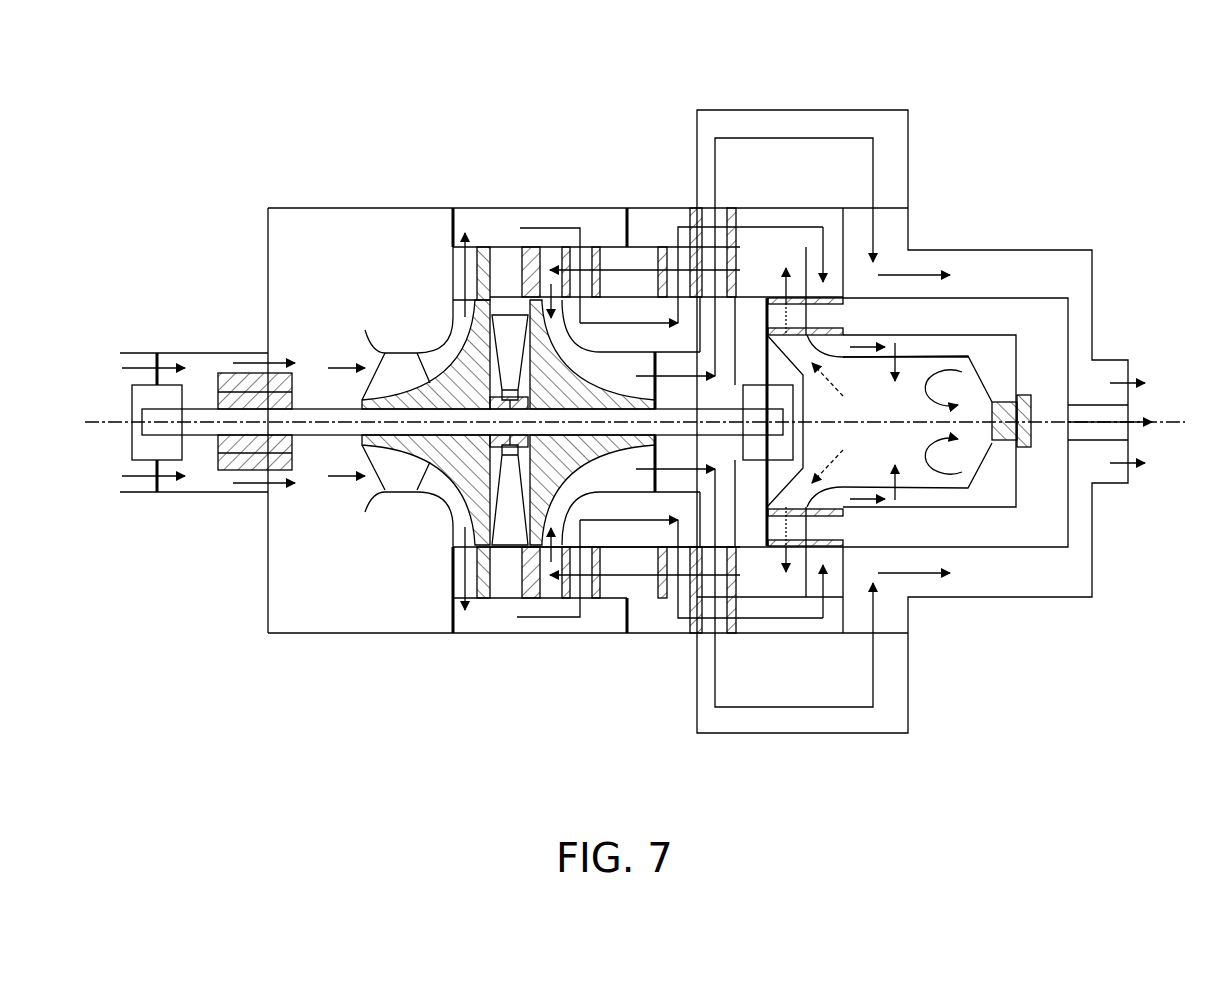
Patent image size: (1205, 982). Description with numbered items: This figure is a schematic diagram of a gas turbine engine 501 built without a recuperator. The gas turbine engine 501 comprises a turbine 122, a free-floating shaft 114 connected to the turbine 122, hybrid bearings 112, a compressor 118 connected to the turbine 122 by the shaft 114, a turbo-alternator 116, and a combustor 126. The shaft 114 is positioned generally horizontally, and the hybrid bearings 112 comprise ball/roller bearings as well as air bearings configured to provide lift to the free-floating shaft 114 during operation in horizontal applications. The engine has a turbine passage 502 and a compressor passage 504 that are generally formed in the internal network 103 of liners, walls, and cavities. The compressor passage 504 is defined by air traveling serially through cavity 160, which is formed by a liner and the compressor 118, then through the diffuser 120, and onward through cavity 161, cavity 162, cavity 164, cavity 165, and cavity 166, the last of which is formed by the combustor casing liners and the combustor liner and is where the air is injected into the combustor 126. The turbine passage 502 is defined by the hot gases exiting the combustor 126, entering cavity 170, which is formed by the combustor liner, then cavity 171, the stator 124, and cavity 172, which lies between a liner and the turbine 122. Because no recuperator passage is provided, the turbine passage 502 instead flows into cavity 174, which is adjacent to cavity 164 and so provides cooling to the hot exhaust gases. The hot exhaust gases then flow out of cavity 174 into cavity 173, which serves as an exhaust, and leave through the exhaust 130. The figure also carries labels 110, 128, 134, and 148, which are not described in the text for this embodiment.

The gas turbine engine 501 is at (150, 147).
The internal network 103 is at (502, 190).
The inlet 110 is at (119, 363).
The hybrid bearings 112 is at (132, 440).
The free-floating shaft 114 is at (197, 410).
The turbo-alternator 116 is at (226, 465).
The compressor 118 is at (398, 487).
The diffuser 120 is at (487, 605).
The turbine 122 is at (610, 480).
The stator 124 is at (553, 600).
The combustor 126 is at (957, 485).
The nozzle plug 128 is at (1025, 383).
The exhaust 130 is at (1153, 462).
The seal 134 is at (705, 225).
The recuperator housing 148 is at (712, 110).
The cavity 160 is at (639, 422).
The cavity 161 is at (645, 393).
The cavity 162 is at (701, 422).
The cavity 164 is at (789, 419).
The cavity 165 is at (826, 422).
The cavity 166 is at (905, 346).
The cavity 170 is at (905, 421).
The cavity 171 is at (770, 422).
The cavity 172 is at (738, 422).
The cavity 173 is at (955, 419).
The cavity 174 is at (832, 400).
The turbine passage 502 is at (822, 380).
The compressor passage 504 is at (542, 227).